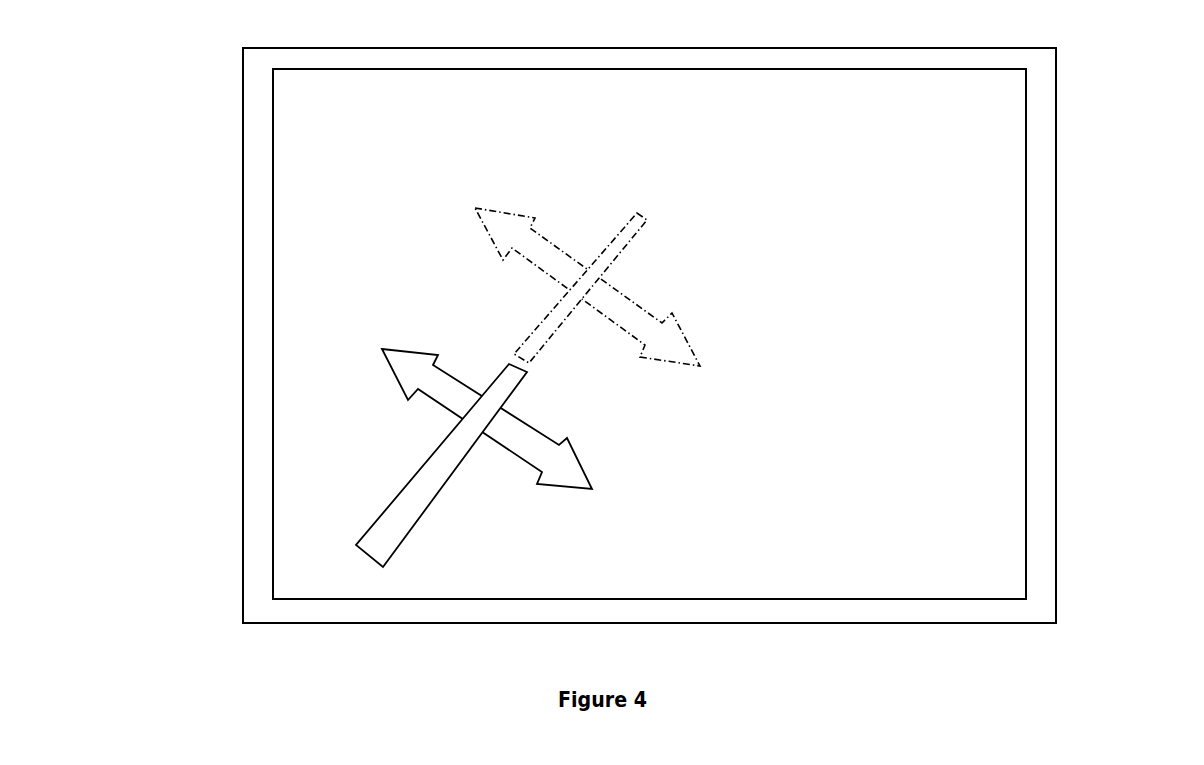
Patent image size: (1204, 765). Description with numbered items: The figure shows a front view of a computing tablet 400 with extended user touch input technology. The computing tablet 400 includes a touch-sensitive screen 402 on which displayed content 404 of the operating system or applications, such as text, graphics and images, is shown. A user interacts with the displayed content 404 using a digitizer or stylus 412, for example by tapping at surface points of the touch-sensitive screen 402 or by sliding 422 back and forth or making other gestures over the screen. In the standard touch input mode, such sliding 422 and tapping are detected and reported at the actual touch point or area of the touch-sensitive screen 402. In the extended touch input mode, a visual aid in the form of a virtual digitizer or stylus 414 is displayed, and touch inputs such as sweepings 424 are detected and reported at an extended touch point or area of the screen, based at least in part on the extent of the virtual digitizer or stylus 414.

The computing tablet 400 is at (153, 149).
The touch-sensitive screen 402 is at (997, 269).
The displayed content 404 is at (689, 116).
The digitizer or stylus 412 is at (459, 484).
The virtual digitizer or stylus 414 is at (654, 215).
The sliding 422 is at (580, 486).
The sweepings 424 is at (695, 330).